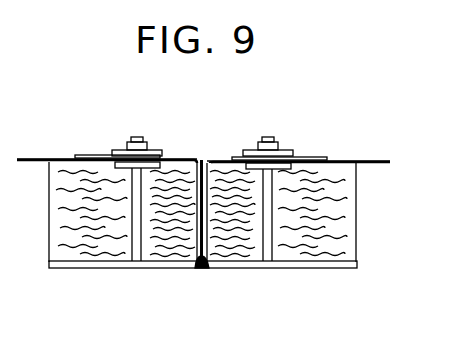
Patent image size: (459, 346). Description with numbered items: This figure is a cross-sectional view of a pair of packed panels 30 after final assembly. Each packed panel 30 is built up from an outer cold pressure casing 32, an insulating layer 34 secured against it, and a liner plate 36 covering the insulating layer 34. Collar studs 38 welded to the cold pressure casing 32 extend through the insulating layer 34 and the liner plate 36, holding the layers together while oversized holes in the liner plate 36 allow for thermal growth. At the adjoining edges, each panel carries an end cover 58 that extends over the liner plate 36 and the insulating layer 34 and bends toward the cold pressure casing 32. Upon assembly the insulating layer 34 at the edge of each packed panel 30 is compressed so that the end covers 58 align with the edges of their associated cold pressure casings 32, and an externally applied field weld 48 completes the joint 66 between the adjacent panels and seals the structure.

The packed panel 30 is at (90, 138).
The outer cold pressure casing 32 is at (98, 266).
The insulating layer 34 is at (49, 228).
The liner plate 36 is at (28, 164).
The collar stud 38 is at (130, 243).
The field weld 48 is at (203, 270).
The end cover 58 is at (213, 157).
The joint 66 is at (181, 126).